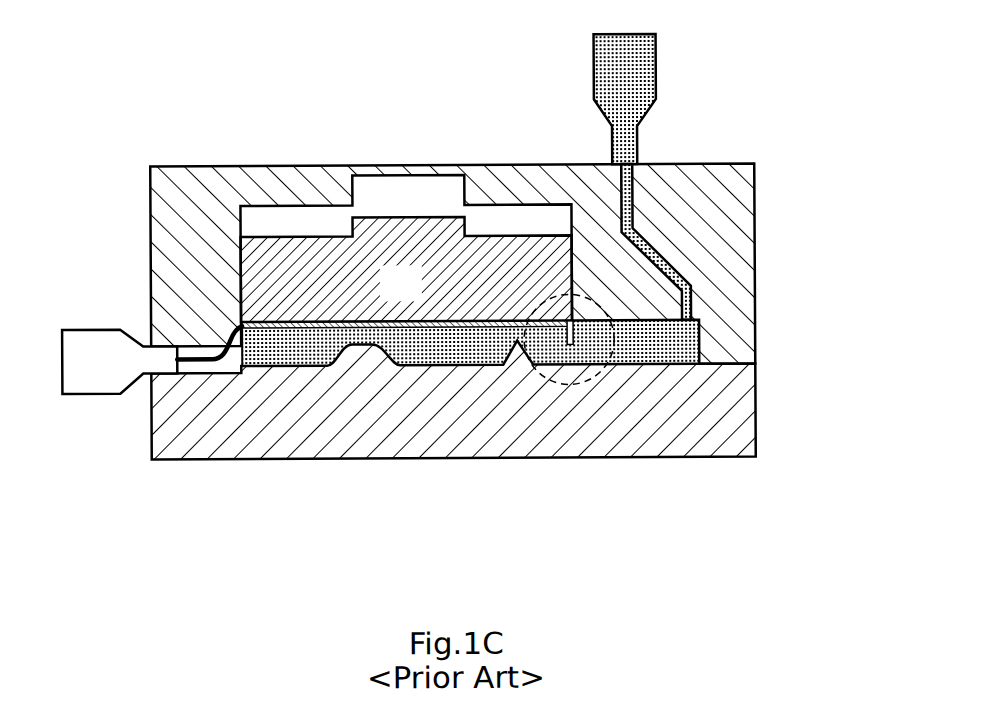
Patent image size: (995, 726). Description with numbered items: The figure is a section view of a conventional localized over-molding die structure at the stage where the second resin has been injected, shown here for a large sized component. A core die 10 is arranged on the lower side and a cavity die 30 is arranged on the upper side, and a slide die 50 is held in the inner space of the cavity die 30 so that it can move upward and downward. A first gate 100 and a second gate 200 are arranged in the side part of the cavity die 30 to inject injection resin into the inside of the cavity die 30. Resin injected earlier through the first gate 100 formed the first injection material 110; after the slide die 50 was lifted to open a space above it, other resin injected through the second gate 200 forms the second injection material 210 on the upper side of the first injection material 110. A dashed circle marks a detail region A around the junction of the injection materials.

The core die 10 is at (747, 412).
The cavity die 30 is at (742, 233).
The slide die 50 is at (415, 297).
The first gate 100 is at (643, 63).
The first injection material 110 is at (697, 338).
The second gate 200 is at (92, 327).
The second injection material 210 is at (314, 320).
The detail region A is at (558, 383).